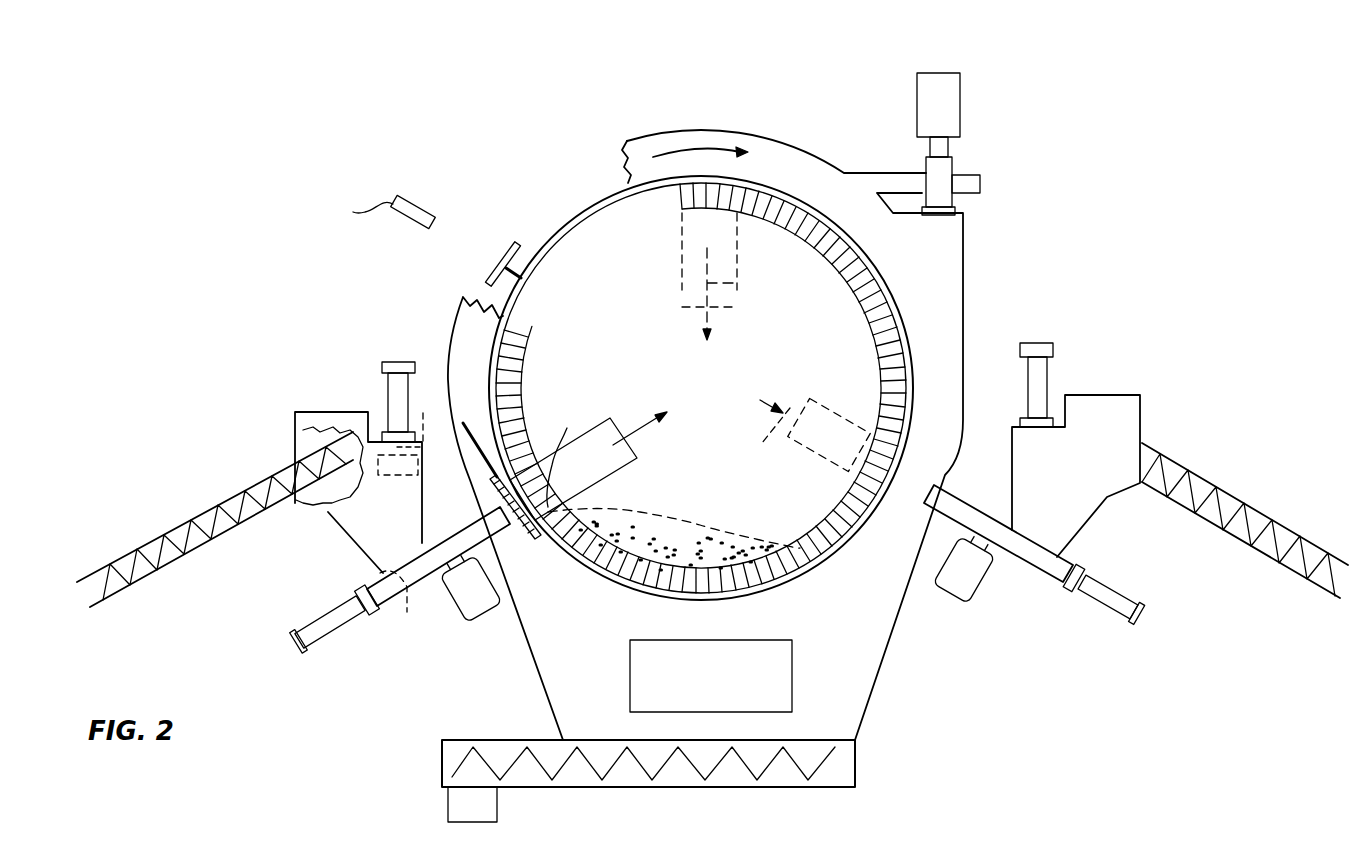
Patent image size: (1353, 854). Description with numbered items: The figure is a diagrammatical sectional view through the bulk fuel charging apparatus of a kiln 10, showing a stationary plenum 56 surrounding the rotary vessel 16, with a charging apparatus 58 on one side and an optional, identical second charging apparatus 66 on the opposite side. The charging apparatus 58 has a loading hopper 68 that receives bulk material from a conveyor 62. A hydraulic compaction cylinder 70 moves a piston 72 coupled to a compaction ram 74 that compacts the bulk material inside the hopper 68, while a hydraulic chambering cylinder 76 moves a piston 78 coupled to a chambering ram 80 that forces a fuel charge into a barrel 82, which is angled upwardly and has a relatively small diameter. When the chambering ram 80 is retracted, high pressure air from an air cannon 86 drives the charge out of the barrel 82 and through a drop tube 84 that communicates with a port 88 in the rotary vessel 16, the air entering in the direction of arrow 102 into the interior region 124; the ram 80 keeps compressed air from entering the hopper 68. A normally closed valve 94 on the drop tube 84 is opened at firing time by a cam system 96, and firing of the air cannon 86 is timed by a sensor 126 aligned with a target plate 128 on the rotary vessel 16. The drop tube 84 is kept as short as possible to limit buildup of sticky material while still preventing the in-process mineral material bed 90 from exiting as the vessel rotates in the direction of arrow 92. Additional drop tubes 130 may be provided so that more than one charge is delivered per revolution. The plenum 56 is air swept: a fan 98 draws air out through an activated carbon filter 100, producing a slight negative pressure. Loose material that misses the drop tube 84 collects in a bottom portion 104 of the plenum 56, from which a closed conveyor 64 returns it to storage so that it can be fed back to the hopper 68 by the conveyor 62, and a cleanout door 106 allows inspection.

The kiln 10 is at (545, 116).
The rotary vessel 16 is at (770, 183).
The plenum 56 is at (666, 130).
The charging apparatus 58 is at (280, 456).
The conveyor 62 is at (127, 582).
The closed conveyor 64 is at (790, 778).
The second charging apparatus 66 is at (1170, 402).
The loading hopper 68 is at (323, 497).
The hydraulic compaction cylinder 70 is at (397, 400).
The piston 72 is at (424, 412).
The compaction ram 74 is at (407, 476).
The hydraulic chambering cylinder 76 is at (330, 628).
The piston 78 is at (377, 610).
The chambering ram 80 is at (406, 609).
The barrel 82 is at (467, 530).
The drop tube 84 is at (592, 420).
The air cannon 86 is at (474, 603).
The port 88 is at (552, 451).
The in-process mineral material bed 90 is at (652, 505).
The arrow 92 is at (703, 150).
The valve 94 is at (532, 546).
The cam system 96 is at (470, 432).
The fan 98 is at (943, 188).
The activated carbon filter 100 is at (952, 97).
The arrow 102 is at (738, 280).
The bottom portion 104 is at (822, 733).
The cleanout door 106 is at (766, 652).
The interior region 124 is at (836, 349).
The sensor 126 is at (415, 206).
The target plate 128 is at (500, 253).
The drop tubes 130 is at (681, 221).